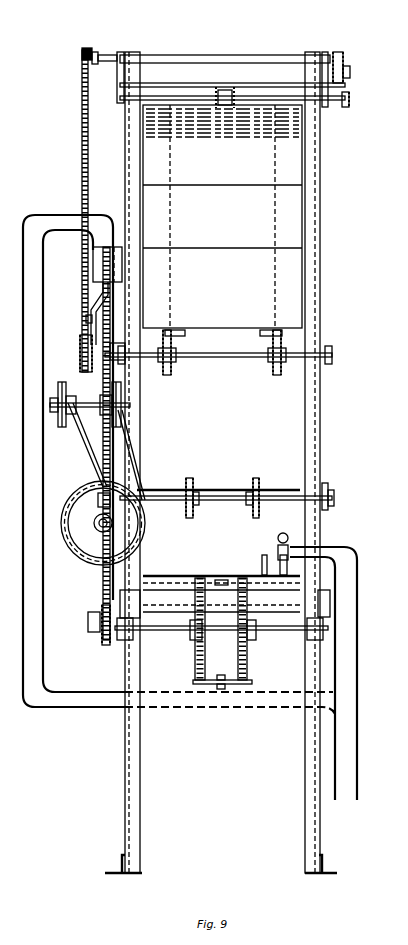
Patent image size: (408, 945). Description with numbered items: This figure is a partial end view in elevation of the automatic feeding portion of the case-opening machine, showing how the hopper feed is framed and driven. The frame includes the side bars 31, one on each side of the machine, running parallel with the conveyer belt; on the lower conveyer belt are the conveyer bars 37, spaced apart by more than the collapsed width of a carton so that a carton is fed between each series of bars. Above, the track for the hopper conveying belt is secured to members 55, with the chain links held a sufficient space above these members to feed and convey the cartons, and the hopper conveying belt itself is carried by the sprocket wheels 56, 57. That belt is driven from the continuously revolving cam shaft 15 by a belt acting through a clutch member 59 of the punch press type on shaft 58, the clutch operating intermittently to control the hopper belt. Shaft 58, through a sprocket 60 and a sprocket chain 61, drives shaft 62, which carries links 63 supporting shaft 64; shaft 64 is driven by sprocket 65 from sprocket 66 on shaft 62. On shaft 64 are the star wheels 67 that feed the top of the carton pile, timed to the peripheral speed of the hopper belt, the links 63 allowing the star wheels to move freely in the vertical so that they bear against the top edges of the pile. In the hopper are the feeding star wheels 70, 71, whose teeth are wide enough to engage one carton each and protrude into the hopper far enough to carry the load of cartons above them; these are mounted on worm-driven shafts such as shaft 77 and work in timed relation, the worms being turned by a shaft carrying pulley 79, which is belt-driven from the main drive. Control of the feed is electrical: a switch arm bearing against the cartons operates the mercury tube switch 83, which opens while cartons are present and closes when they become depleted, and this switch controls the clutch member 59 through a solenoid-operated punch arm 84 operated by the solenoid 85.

The cam shaft 15 is at (88, 622).
The side bars 31 is at (323, 257).
The conveyer bars 37 is at (210, 680).
The members 55 is at (180, 350).
The sprocket wheel 56 is at (172, 368).
The sprocket wheel 57 is at (272, 368).
The shaft 58 is at (228, 359).
The clutch member 59 is at (93, 373).
The sprocket 60 is at (84, 357).
The sprocket chain 61 is at (82, 160).
The shaft 62 is at (212, 55).
The links 63 is at (122, 52).
The shaft 64 is at (342, 107).
The sprocket 65 is at (346, 62).
The sprocket 66 is at (87, 48).
The star wheels 67 is at (216, 90).
The feeding star wheel 70 is at (191, 480).
The feeding star wheel 71 is at (257, 480).
The shaft 77 is at (228, 502).
The pulley 79 is at (78, 556).
The mercury tube switch 83 is at (285, 534).
The solenoid-operated punch arm 84 is at (96, 302).
The solenoid 85 is at (94, 266).